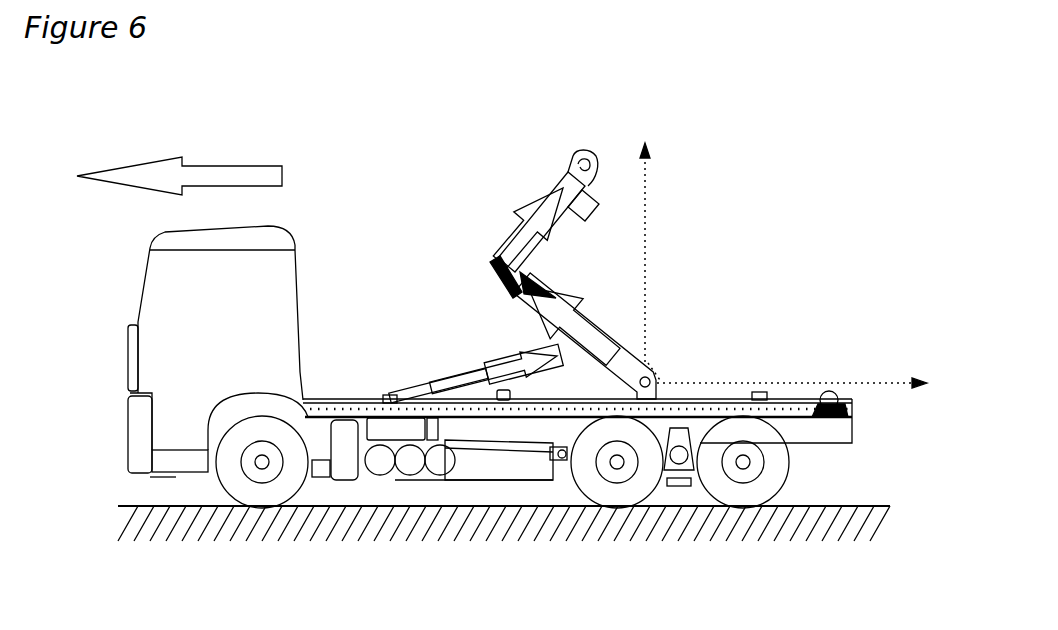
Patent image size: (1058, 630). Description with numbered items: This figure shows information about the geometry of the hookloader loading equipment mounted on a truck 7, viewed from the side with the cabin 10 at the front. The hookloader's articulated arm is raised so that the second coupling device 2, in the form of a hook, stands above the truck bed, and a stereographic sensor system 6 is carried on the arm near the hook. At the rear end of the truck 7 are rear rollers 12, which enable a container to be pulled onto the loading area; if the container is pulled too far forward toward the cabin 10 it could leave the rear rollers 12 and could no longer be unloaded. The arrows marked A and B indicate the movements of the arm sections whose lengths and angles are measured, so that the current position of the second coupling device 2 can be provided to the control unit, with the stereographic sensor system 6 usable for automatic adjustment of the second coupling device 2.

The cabin 10 is at (252, 280).
The truck 7 is at (502, 493).
The second coupling device 2 is at (584, 153).
The stereographic sensor system 6 is at (588, 203).
The rear rollers 12 is at (838, 394).
The tilt arm direction A is at (562, 310).
The hook arm direction B is at (520, 232).